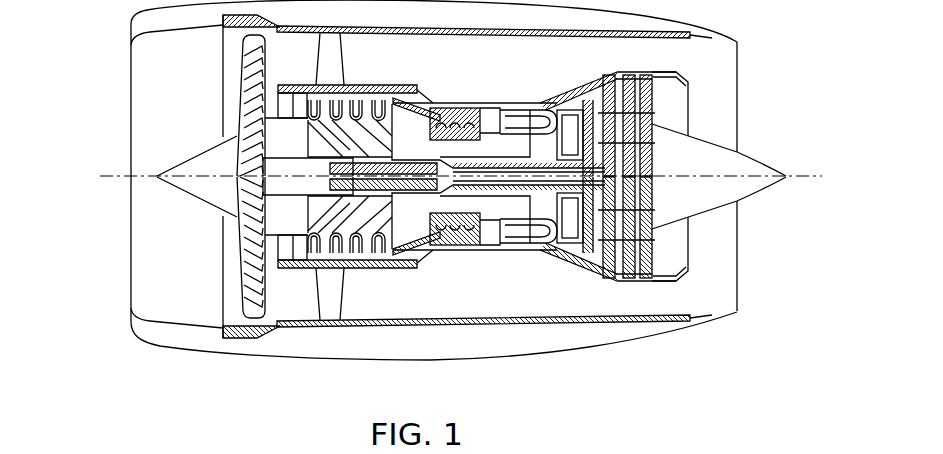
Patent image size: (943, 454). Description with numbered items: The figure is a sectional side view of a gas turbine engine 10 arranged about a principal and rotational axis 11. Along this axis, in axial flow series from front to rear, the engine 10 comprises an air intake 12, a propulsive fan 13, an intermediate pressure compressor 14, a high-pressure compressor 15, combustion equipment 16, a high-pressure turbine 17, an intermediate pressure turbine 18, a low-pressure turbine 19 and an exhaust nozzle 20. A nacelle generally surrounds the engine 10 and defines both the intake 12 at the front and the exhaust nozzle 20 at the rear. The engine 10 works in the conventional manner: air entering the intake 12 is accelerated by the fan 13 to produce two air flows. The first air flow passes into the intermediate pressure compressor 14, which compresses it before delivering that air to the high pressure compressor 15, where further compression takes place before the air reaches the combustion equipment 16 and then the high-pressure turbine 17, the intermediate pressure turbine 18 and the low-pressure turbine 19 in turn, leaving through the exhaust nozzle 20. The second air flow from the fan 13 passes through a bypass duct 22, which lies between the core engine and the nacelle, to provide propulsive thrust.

The gas turbine engine 10 is at (100, 58).
The principal and rotational axis 11 is at (147, 175).
The air intake 12 is at (190, 26).
The propulsive fan 13 is at (237, 276).
The intermediate pressure compressor 14 is at (370, 252).
The high-pressure compressor 15 is at (454, 122).
The combustion equipment 16 is at (508, 246).
The high-pressure turbine 17 is at (560, 252).
The intermediate pressure turbine 18 is at (600, 97).
The low-pressure turbine 19 is at (612, 262).
The exhaust nozzle 20 is at (739, 292).
The bypass duct 22 is at (402, 76).